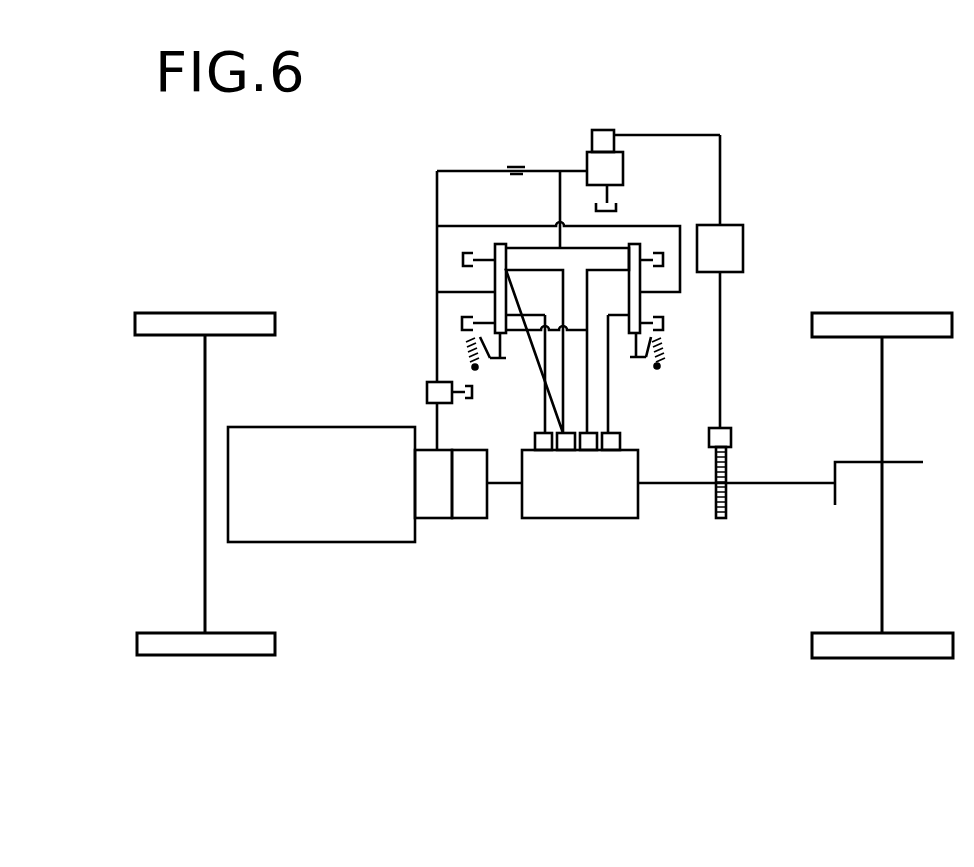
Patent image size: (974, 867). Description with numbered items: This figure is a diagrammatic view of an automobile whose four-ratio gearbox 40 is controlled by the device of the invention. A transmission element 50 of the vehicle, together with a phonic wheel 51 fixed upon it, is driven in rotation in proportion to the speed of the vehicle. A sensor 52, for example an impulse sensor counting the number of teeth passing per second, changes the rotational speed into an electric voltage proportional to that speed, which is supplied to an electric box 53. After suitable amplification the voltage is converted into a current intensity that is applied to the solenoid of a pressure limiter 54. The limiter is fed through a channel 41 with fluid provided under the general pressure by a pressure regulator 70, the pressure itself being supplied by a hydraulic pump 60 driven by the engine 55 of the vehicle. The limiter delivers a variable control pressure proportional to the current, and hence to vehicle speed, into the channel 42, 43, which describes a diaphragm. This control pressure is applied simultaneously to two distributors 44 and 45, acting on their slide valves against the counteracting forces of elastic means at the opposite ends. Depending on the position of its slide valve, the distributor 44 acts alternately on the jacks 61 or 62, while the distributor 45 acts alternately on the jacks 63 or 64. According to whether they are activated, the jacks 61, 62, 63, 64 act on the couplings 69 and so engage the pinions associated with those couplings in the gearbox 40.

The gearbox 40 is at (590, 508).
The channel 41 is at (436, 238).
The channel 42 is at (560, 186).
The channel 43 is at (517, 167).
The distributor 44 is at (503, 246).
The distributor 45 is at (634, 244).
The transmission element 50 is at (783, 484).
The phonic wheel 51 is at (725, 517).
The sensor 52 is at (731, 431).
The electric box 53 is at (743, 256).
The pressure limiter 54 is at (587, 160).
The engine 55 is at (322, 523).
The hydraulic pump 60 is at (438, 507).
The jack 61 is at (535, 440).
The jack 62 is at (562, 432).
The jack 63 is at (590, 430).
The jack 64 is at (615, 430).
The couplings 69 is at (473, 508).
The pressure regulator 70 is at (430, 382).